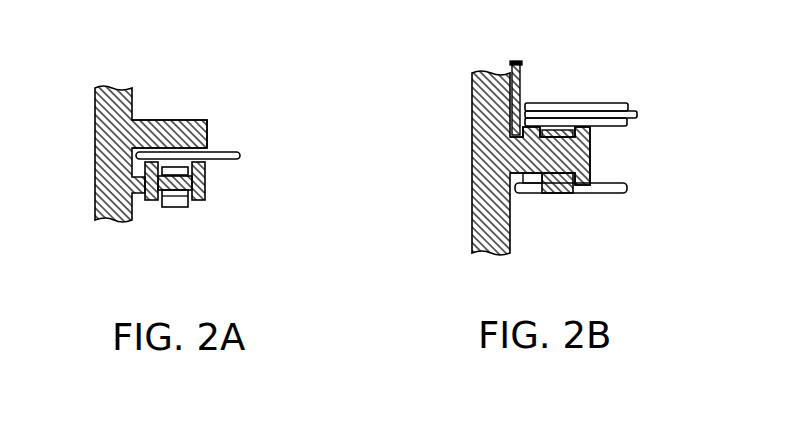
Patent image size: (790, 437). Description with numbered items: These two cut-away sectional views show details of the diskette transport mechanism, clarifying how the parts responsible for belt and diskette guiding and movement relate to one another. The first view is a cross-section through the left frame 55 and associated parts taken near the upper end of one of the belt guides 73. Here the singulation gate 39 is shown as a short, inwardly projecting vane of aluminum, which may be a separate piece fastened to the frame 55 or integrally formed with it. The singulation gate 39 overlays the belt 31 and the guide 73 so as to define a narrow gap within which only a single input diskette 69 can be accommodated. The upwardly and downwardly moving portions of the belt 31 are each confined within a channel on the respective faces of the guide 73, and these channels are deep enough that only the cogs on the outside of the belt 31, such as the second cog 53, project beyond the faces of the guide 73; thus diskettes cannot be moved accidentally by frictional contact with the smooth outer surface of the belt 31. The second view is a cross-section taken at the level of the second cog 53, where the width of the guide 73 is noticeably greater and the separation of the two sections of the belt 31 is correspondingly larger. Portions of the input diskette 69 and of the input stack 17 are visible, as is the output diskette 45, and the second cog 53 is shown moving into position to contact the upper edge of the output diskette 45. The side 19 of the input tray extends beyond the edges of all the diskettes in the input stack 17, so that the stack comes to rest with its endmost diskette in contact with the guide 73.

In FIG. 2B, the input stack 17 is at (632, 91).
In FIG. 2B, the side 19 is at (521, 73).
In FIG. 2A, the belt 31 is at (184, 221).
In FIG. 2B, the belt 31 is at (586, 203).
In FIG. 2A, the singulation gate 39 is at (173, 120).
In FIG. 2B, the output diskette 45 is at (630, 190).
In FIG. 2A, the second cog 53 is at (172, 207).
In FIG. 2B, the second cog 53 is at (553, 194).
In FIG. 2A, the left frame 55 is at (112, 88).
In FIG. 2B, the left frame 55 is at (471, 90).
In FIG. 2A, the input diskette 69 is at (232, 152).
In FIG. 2B, the input diskette 69 is at (630, 119).
In FIG. 2A, the belt guide 73 is at (205, 178).
In FIG. 2B, the belt guide 73 is at (591, 163).